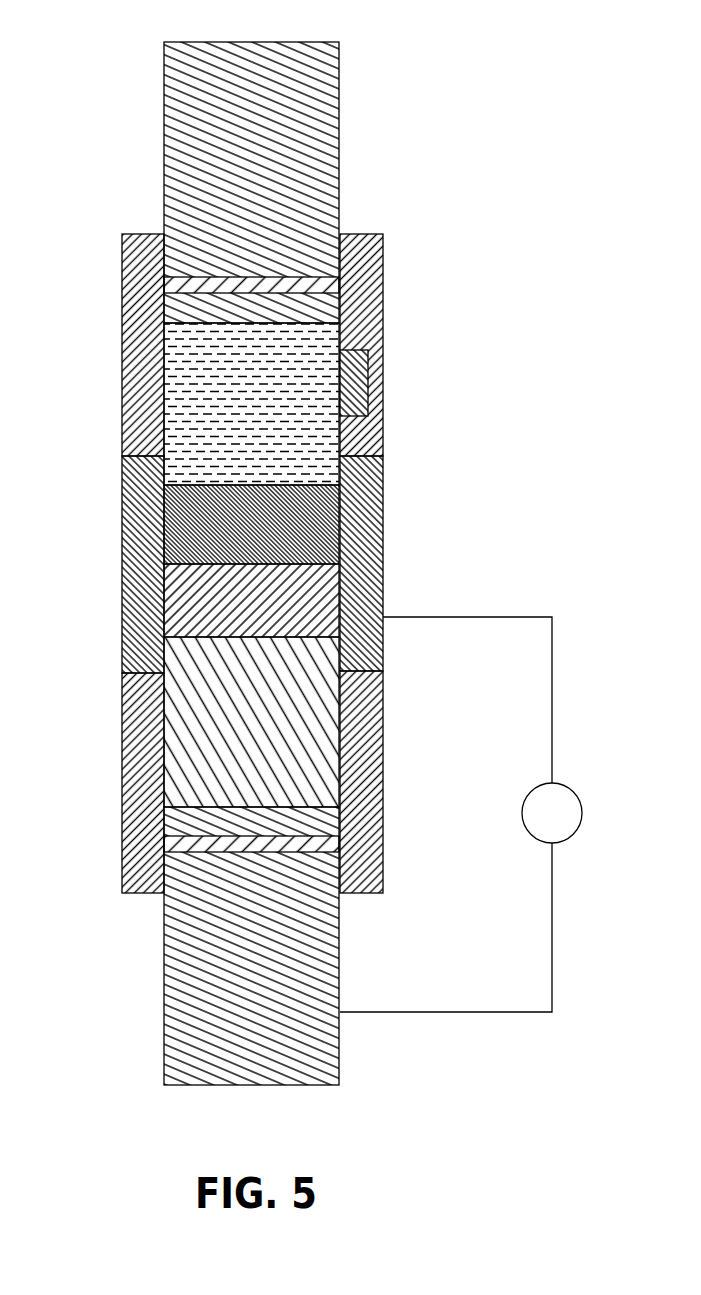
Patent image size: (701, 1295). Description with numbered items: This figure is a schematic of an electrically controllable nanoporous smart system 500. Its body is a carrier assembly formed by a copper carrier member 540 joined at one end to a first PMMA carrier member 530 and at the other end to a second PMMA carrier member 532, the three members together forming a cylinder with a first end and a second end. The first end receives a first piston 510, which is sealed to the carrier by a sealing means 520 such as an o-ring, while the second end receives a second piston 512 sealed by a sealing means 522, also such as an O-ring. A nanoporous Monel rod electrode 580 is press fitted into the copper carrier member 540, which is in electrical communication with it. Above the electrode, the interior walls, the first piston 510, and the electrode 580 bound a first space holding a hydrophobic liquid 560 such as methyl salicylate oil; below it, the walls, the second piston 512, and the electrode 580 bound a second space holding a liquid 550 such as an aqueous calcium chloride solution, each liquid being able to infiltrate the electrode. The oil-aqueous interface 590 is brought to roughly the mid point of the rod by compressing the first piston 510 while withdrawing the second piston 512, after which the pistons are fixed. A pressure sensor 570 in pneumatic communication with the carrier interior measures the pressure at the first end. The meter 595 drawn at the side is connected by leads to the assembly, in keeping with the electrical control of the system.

The system 500 is at (468, 65).
The first piston 510 is at (180, 61).
The second piston 512 is at (178, 1045).
The sealing means 520 is at (178, 286).
The sealing means 522 is at (180, 843).
The first PMMA carrier member 530 is at (121, 382).
The second PMMA carrier member 532 is at (128, 805).
The copper carrier member 540 is at (122, 580).
The liquid 550 is at (205, 745).
The hydrophobic liquid 560 is at (287, 345).
The pressure sensor 570 is at (355, 387).
The nanoporous Monel rod electrode 580 is at (313, 526).
The oil-aqueous interface 590 is at (313, 565).
The voltmeter 595 is at (578, 790).